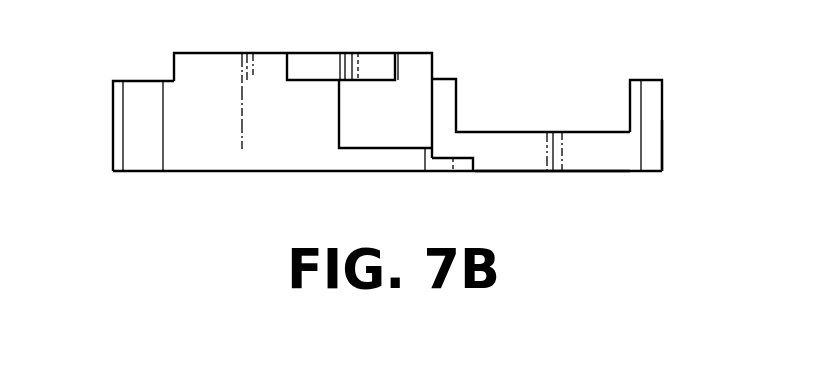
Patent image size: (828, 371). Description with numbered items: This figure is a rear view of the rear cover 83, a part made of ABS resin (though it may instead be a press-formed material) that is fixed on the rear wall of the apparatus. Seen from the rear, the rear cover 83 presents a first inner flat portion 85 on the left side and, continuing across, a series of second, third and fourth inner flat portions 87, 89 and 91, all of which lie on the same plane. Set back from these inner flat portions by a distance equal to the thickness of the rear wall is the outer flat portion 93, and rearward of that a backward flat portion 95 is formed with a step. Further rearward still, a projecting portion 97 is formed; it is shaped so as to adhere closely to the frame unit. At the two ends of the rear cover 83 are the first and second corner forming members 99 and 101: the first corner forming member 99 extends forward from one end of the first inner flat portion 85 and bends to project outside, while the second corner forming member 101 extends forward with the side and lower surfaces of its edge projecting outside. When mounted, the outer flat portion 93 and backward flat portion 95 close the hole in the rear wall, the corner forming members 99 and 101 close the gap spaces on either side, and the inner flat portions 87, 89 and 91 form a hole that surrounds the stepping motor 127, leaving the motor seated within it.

The rear cover 83 is at (528, 173).
The first inner flat portion 85 is at (152, 172).
The second inner flat portion 87 is at (457, 98).
The third inner flat portion 89 is at (572, 173).
The fourth inner flat portion 91 is at (633, 80).
The outer flat portion 93 is at (257, 172).
The backward flat portion 95 is at (403, 87).
The projecting portion 97 is at (303, 60).
The first corner forming member 99 is at (112, 143).
The second corner forming member 101 is at (650, 174).
The stepping motor 127 is at (463, 172).